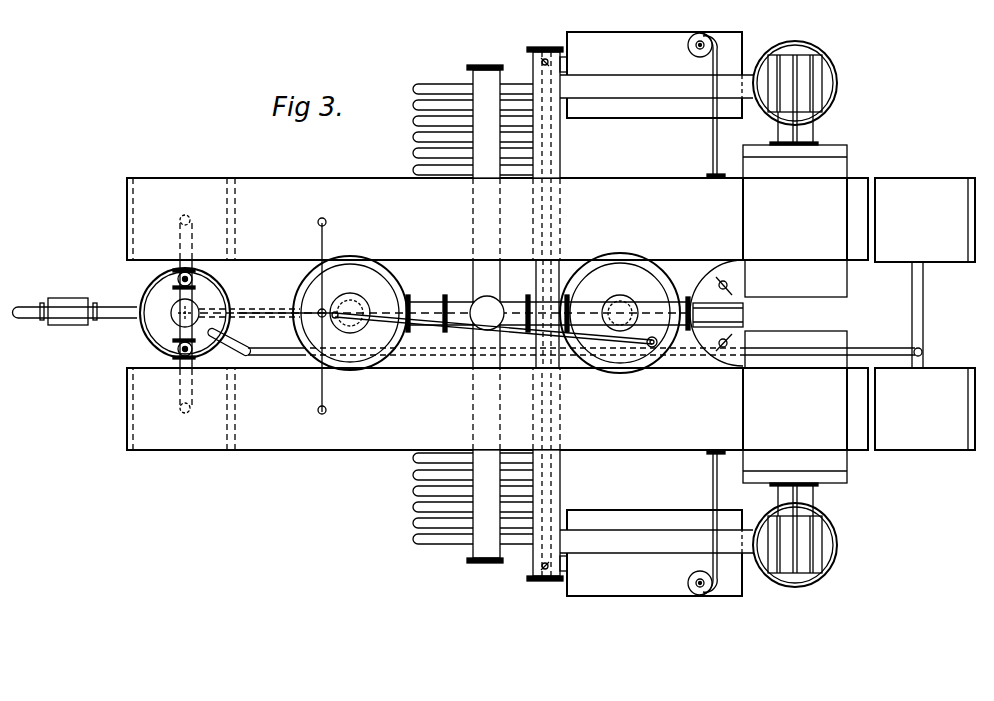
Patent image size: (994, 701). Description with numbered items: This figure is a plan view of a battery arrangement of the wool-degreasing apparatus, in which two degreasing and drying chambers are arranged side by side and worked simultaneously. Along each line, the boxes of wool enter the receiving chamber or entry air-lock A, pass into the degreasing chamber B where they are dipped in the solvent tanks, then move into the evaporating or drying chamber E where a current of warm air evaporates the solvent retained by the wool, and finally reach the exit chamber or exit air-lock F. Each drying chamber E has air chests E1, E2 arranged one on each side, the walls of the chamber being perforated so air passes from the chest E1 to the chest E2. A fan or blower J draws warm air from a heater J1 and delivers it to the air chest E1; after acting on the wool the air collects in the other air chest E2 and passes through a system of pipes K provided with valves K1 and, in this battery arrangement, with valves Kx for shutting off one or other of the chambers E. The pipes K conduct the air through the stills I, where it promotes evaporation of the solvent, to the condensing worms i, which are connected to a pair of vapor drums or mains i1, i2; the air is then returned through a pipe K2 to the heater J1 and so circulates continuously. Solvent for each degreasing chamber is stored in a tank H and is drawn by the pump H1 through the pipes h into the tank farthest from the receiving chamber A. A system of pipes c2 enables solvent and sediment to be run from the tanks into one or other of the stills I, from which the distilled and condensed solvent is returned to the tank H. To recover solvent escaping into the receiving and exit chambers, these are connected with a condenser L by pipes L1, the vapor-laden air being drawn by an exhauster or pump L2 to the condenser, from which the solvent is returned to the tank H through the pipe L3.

The receiving chamber A is at (184, 314).
The degreasing chamber B is at (497, 314).
The evaporating or drying chamber E is at (795, 314).
The air chest E1 is at (795, 256).
The air chest E2 is at (795, 371).
The exit chamber F is at (925, 314).
The solvent tank H is at (654, 314).
The pump H1 is at (705, 38).
The pipe K2 is at (656, 316).
The fan or blower J is at (822, 112).
The heater J1 is at (826, 58).
The pipes h is at (712, 150).
The condensing worms i is at (412, 121).
The vapor drum or main i1 is at (485, 314).
The vapor drum or main i2 is at (542, 60).
The pipe L3 is at (545, 52).
The condenser L is at (185, 314).
The pipes L1 is at (195, 268).
The exhauster or pump L2 is at (72, 325).
The stills I is at (486, 313).
The pipes K is at (430, 303).
The valves K1 is at (493, 332).
The valves Kx is at (745, 313).
The pipes c2 is at (323, 300).